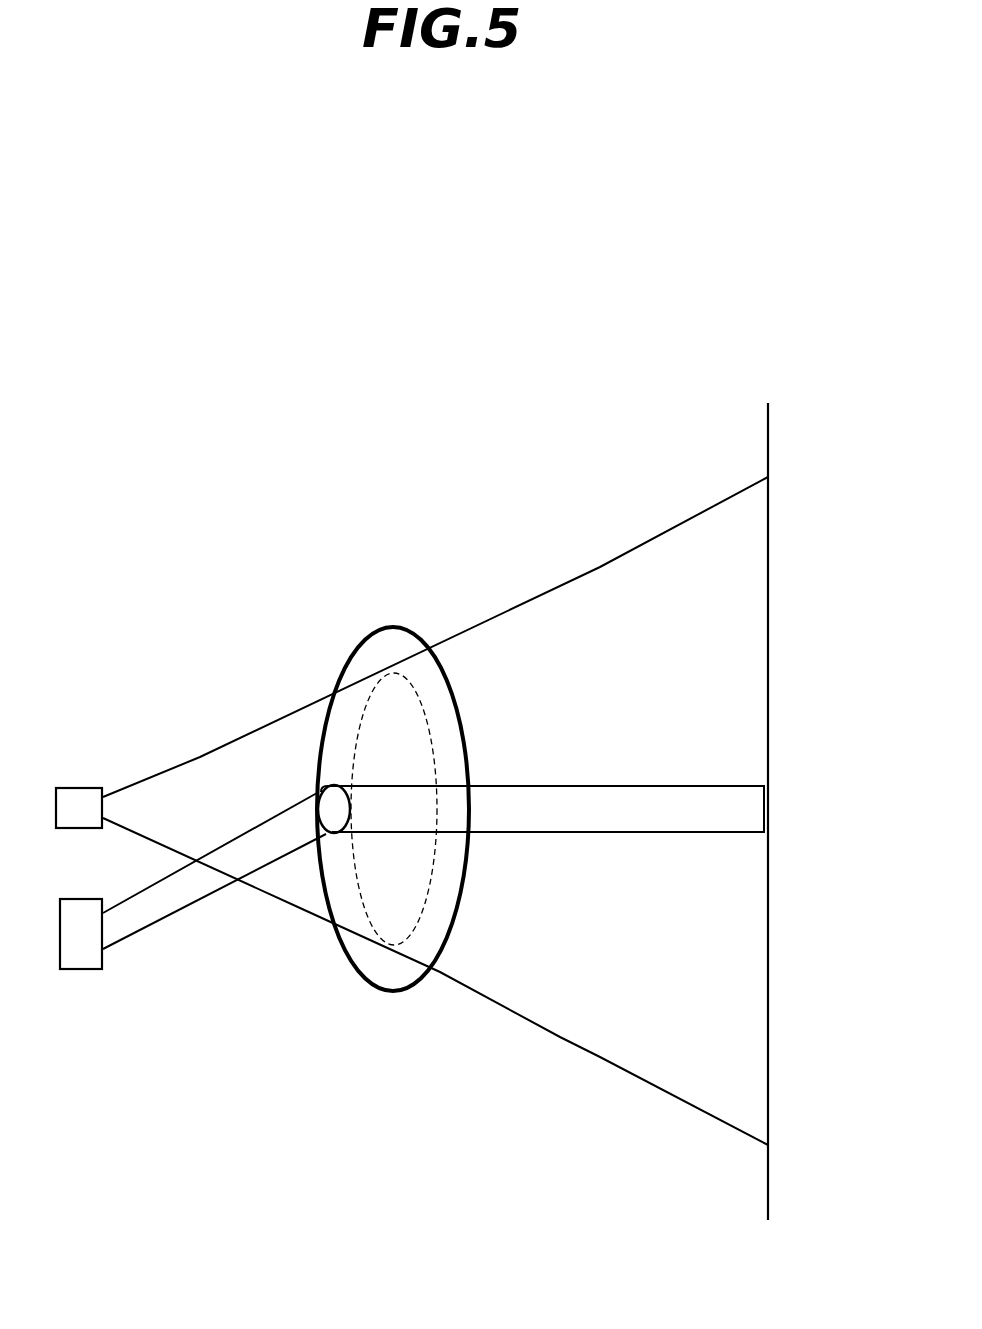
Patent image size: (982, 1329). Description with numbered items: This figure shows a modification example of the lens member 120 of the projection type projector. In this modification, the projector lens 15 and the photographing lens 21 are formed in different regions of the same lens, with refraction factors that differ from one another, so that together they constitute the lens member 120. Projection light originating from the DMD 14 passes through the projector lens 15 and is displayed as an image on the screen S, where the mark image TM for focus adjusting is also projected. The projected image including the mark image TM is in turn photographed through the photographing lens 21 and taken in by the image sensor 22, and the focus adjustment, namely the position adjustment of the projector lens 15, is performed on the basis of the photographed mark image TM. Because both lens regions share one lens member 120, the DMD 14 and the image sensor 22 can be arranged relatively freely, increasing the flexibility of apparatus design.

The DMD 14 is at (77, 787).
The image sensor 22 is at (80, 970).
The photographing lens 21 is at (320, 835).
The projector lens 15 is at (465, 735).
The lens member 120 is at (433, 770).
The screen S is at (772, 792).
The mark image TM is at (774, 813).